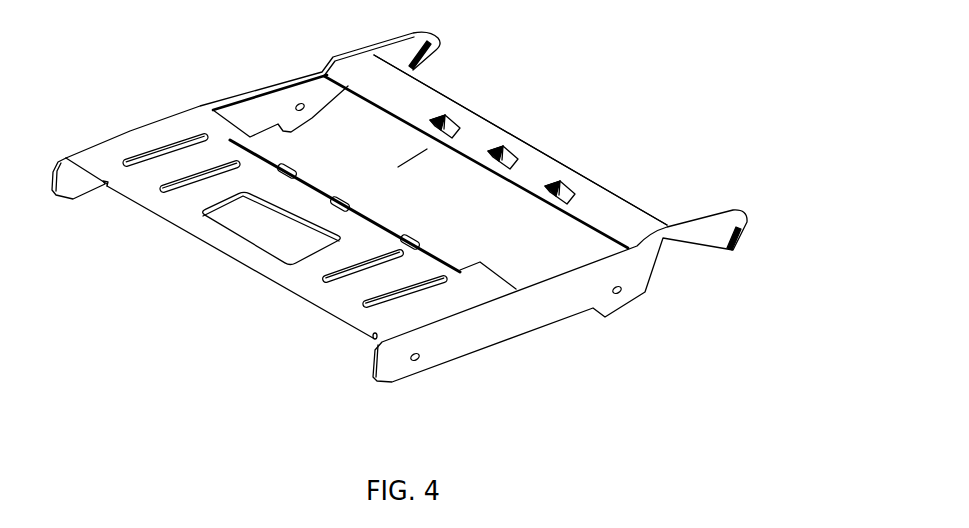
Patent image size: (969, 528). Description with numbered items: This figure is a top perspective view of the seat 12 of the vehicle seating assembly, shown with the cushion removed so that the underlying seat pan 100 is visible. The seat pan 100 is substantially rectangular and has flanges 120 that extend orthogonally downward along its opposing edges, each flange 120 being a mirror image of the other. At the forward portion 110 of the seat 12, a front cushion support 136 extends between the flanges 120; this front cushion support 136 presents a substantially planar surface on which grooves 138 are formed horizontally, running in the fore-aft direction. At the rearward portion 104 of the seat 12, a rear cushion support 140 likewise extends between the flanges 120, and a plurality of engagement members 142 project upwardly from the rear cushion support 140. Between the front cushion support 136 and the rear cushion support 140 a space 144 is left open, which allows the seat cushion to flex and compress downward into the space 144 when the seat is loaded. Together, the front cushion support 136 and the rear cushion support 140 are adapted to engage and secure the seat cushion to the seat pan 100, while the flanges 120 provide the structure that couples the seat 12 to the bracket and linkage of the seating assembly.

The seat 12 is at (166, 92).
The seat pan 100 is at (313, 268).
The rearward portion 104 is at (420, 90).
The forward portion 110 is at (253, 256).
The flange 120 is at (259, 115).
The front cushion support 136 is at (350, 233).
The grooves 138 is at (405, 253).
The rear cushion support 140 is at (550, 163).
The engagement members 142 is at (443, 123).
The space 144 is at (427, 149).